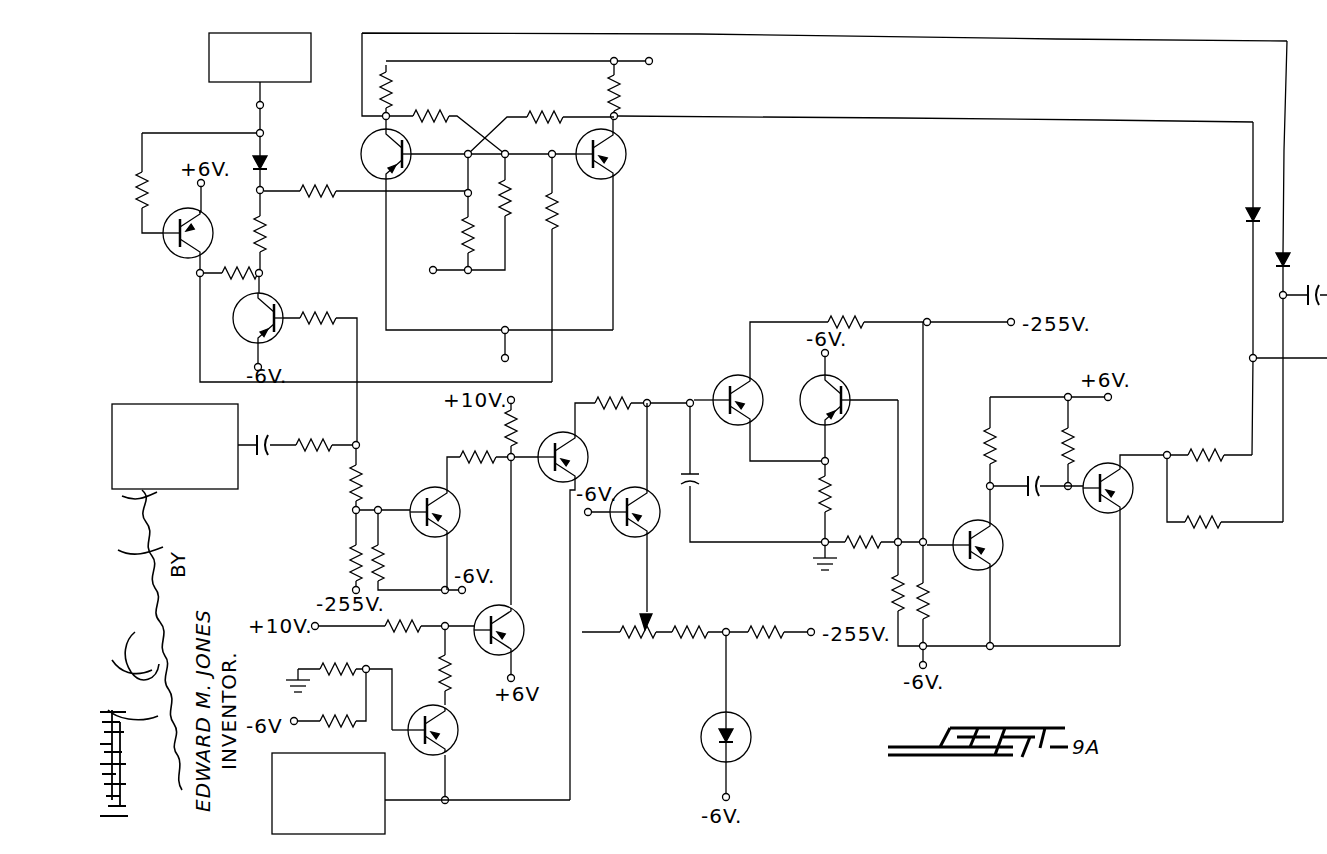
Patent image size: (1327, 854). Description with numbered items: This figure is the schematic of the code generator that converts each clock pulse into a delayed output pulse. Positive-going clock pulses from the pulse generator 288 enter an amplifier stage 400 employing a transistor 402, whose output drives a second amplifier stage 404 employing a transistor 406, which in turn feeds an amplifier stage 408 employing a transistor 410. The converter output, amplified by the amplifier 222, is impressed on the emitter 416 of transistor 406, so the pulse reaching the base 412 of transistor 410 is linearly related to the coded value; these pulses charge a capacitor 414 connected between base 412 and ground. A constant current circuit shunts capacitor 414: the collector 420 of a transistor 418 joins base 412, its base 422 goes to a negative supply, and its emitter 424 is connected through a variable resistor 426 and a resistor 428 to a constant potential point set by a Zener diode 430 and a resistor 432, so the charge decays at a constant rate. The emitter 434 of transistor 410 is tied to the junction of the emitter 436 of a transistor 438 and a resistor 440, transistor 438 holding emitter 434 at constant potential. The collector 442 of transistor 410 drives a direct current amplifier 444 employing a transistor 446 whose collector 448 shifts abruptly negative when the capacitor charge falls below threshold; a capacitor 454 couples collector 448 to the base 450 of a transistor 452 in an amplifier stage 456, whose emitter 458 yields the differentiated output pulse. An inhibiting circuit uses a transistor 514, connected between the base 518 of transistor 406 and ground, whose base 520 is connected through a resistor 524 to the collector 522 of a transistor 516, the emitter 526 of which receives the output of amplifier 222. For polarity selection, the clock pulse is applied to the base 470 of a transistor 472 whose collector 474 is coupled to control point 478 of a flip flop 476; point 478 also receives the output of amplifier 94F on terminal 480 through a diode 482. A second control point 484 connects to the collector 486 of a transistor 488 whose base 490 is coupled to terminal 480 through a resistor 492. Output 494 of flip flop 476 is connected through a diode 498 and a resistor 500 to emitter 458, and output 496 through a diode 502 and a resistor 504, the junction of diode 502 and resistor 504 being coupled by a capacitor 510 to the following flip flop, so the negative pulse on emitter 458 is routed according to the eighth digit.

The amplifier 94F is at (209, 50).
The flip flop 476 is at (824, 196).
The terminal 480 is at (265, 106).
The diode 482 is at (266, 160).
The control point 478 is at (265, 189).
The output terminal 496 is at (389, 113).
The output terminal 494 is at (618, 118).
The resistor 492 is at (145, 176).
The transistor 488 is at (195, 209).
The collector 486 is at (194, 246).
The base 490 is at (176, 246).
The control point 484 is at (198, 279).
The collector 474 is at (262, 306).
The transistor 472 is at (249, 341).
The base 470 is at (282, 329).
The pulse generator 288 is at (154, 404).
The amplifier stage 400 is at (345, 499).
The transistor 402 is at (422, 490).
The second amplifier stage 404 is at (553, 418).
The transistor 406 is at (580, 447).
The base 518 is at (550, 470).
The emitter 416 is at (568, 473).
The base 422 is at (622, 496).
The collector 420 is at (651, 500).
The transistor 418 is at (624, 533).
The emitter 424 is at (648, 535).
The capacitor 414 is at (694, 483).
The base 412 is at (720, 395).
The collector 442 is at (730, 380).
The transistor 410 is at (749, 386).
The emitter 434 is at (736, 422).
The amplifier stage 408 is at (732, 306).
The transistor 438 is at (840, 385).
The emitter 436 is at (832, 425).
The resistor 440 is at (822, 497).
The collector 448 is at (976, 524).
The D.C. amplifier 444 is at (969, 570).
The transistor 446 is at (1000, 562).
The capacitor 454 is at (1031, 478).
The amplifier stage 456 is at (1122, 445).
The emitter 458 is at (1108, 477).
The base 450 is at (1098, 500).
The transistor 452 is at (1128, 516).
The resistor 500 is at (1208, 440).
The resistor 504 is at (1206, 527).
The diode 498 is at (1243, 212).
The diode 502 is at (1288, 252).
The capacitor 510 is at (1306, 306).
The base 520 is at (485, 625).
The transistor 514 is at (522, 644).
The collector 522 is at (434, 714).
The resistor 524 is at (448, 680).
The transistor 516 is at (460, 737).
The emitter 526 is at (433, 754).
The amplifier 222 is at (316, 760).
The variable resistor 426 is at (622, 641).
The resistor 428 is at (688, 641).
The resistor 432 is at (763, 641).
The Zener diode 430 is at (704, 754).